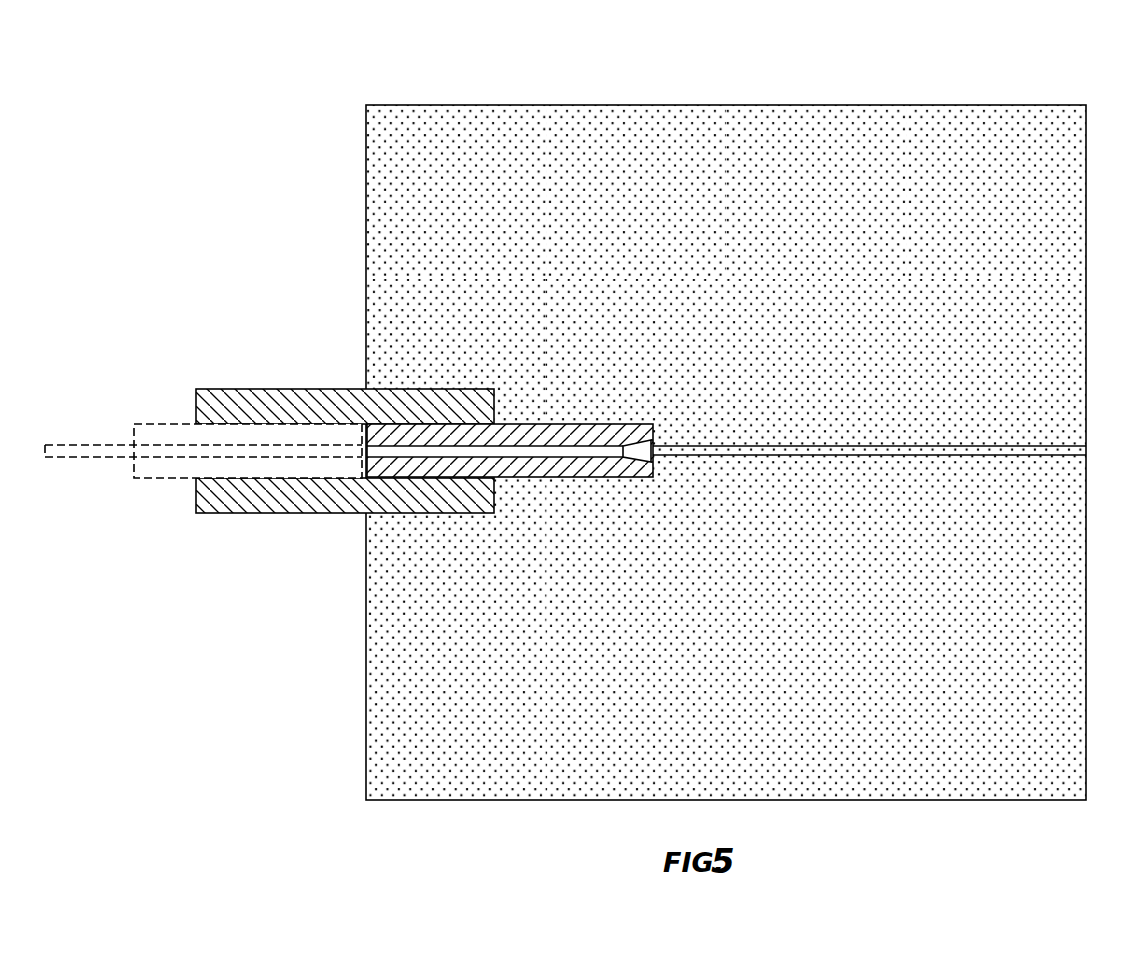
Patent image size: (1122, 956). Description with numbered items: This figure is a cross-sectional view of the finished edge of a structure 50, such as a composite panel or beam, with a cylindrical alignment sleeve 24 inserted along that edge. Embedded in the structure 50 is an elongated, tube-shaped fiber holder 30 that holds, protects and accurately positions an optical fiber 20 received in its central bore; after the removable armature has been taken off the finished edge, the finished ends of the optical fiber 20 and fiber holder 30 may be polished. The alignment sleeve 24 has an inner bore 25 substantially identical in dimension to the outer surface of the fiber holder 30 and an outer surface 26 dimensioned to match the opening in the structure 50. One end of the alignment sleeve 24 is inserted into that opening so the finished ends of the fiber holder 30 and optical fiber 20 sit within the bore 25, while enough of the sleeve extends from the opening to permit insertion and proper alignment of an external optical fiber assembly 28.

The structure 50 is at (778, 124).
The optical fiber 20 is at (830, 444).
The fiber holder 30 is at (545, 424).
The alignment sleeve 24 is at (243, 389).
The outer surface 26 is at (296, 514).
The inner bore 25 is at (307, 426).
The external optical fiber assembly 28 is at (152, 470).